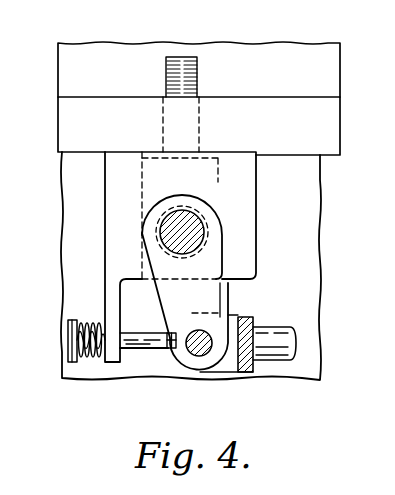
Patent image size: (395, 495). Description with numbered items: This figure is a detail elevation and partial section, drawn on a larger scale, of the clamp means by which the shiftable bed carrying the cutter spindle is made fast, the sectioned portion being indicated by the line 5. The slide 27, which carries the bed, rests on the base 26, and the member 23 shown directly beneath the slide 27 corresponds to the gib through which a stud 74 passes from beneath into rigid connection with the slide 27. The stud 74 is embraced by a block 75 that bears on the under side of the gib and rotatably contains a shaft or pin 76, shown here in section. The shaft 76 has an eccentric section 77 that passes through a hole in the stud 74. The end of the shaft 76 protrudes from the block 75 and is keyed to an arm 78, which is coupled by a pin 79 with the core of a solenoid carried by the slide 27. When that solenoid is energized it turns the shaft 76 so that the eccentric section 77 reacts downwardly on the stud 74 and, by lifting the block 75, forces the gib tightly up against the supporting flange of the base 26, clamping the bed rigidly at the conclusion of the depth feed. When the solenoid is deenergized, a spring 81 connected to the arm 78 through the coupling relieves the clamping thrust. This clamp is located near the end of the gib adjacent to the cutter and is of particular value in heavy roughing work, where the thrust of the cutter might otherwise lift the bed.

The section line 5- 5 is at (168, 402).
The lower plate 23 is at (333, 132).
The base 26 is at (310, 253).
The slide 27 is at (333, 75).
The stud 74 is at (143, 293).
The block 75 is at (245, 212).
The shaft or pin 76 is at (196, 233).
The eccentric section 77 is at (148, 295).
The arm 78 is at (213, 300).
The pin 79 is at (214, 358).
The spring 81 is at (92, 316).